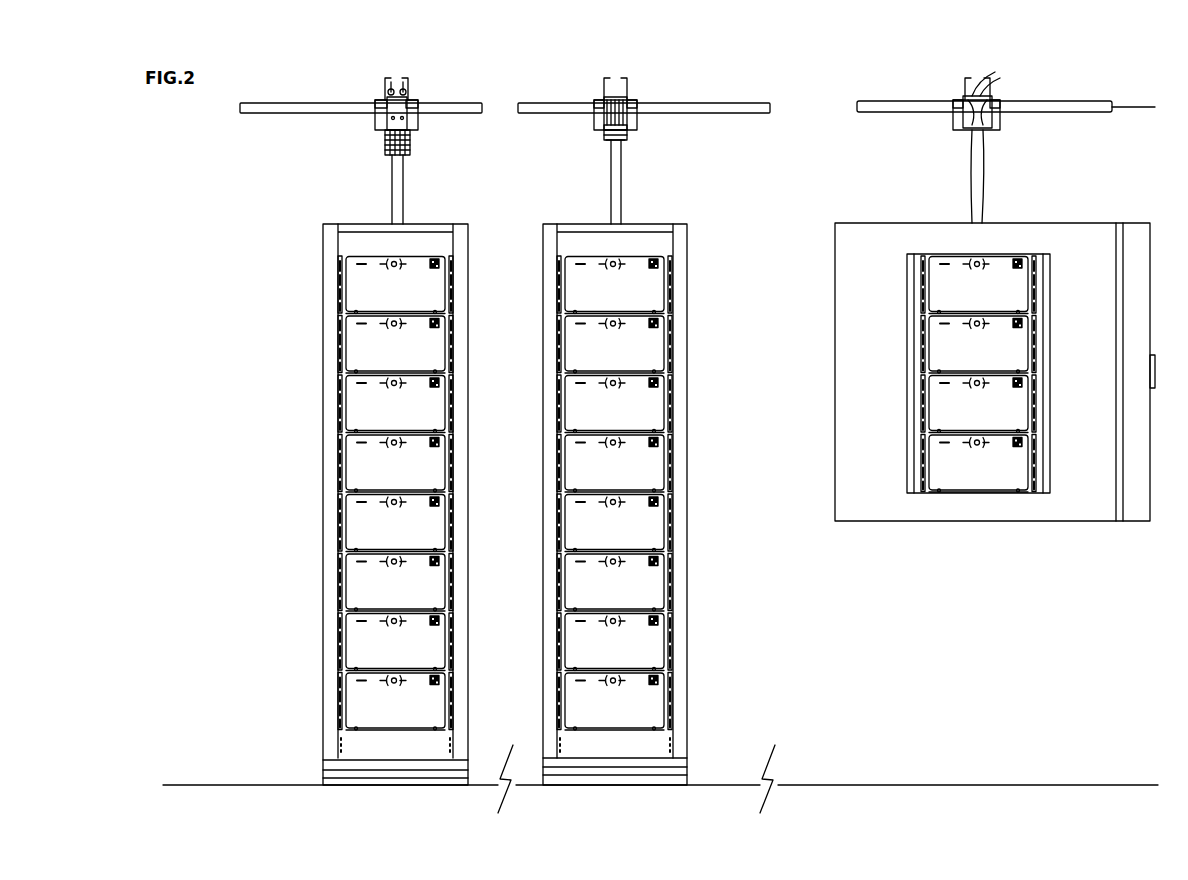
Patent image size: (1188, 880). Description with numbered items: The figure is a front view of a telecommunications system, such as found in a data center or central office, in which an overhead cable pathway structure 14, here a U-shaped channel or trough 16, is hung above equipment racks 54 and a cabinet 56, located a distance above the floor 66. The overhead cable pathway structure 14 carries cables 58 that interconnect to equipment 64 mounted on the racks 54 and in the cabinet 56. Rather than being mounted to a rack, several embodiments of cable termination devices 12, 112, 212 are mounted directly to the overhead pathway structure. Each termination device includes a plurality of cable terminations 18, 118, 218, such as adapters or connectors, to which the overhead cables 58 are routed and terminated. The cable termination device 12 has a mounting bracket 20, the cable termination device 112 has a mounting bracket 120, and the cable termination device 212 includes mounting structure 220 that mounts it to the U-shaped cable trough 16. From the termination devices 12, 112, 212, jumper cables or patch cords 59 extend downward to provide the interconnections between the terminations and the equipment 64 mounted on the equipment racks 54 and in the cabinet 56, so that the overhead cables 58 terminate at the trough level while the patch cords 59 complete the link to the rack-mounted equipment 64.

The cable termination device 12 is at (596, 92).
The overhead cable pathway structure 14 is at (450, 107).
The U-shaped channel or trough 16 is at (745, 110).
The cable terminations 18 is at (595, 137).
The mounting bracket 20 is at (640, 95).
The rack 54 is at (323, 437).
The cabinet 56 is at (937, 522).
The cables 58 is at (388, 95).
The jumper cables or patch cords 59 is at (395, 205).
The equipment 64 is at (365, 575).
The floor 66 is at (267, 783).
The cable termination device 112 is at (945, 92).
The cable terminations 118 is at (992, 125).
The mounting bracket 120 is at (1000, 95).
The cable termination device 212 is at (370, 137).
The cable terminations 218 is at (410, 147).
The mounting structure 220 is at (418, 100).